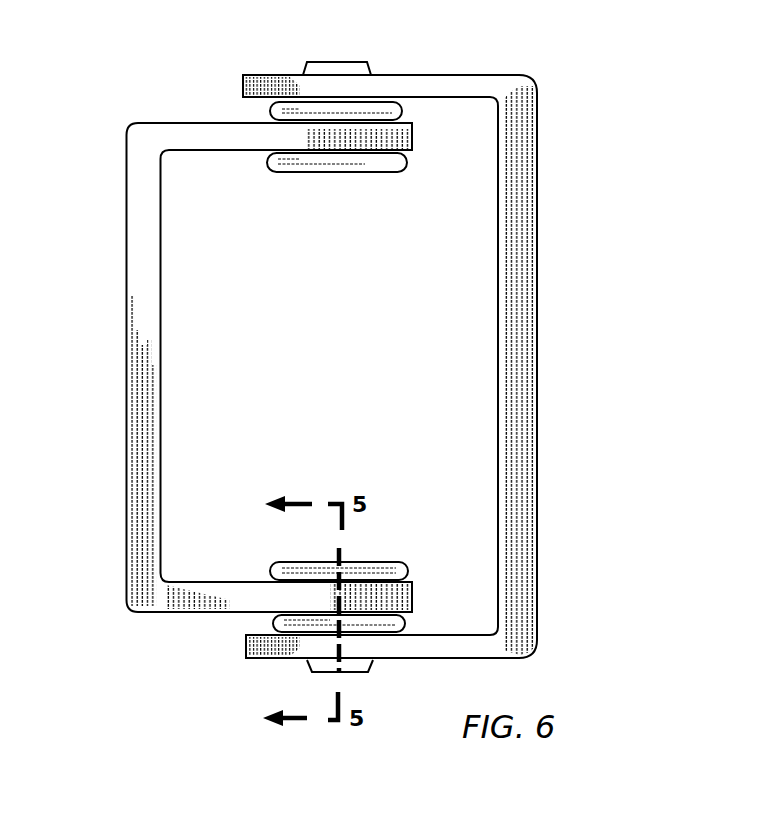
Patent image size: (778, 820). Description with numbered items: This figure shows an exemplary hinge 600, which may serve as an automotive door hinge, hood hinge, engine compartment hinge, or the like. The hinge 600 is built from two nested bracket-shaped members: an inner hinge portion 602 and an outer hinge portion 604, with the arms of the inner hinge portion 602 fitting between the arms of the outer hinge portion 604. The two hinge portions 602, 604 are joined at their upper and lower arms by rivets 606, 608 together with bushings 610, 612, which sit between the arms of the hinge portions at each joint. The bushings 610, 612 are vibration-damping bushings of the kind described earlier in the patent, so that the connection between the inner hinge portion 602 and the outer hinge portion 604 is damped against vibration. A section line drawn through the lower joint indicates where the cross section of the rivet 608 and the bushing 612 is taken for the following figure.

The hinge 600 is at (580, 170).
The inner hinge portion 602 is at (217, 367).
The outer hinge portion 604 is at (444, 366).
The rivet 606 is at (391, 39).
The rivet 608 is at (264, 690).
The bushing 610 is at (219, 103).
The bushing 612 is at (221, 635).